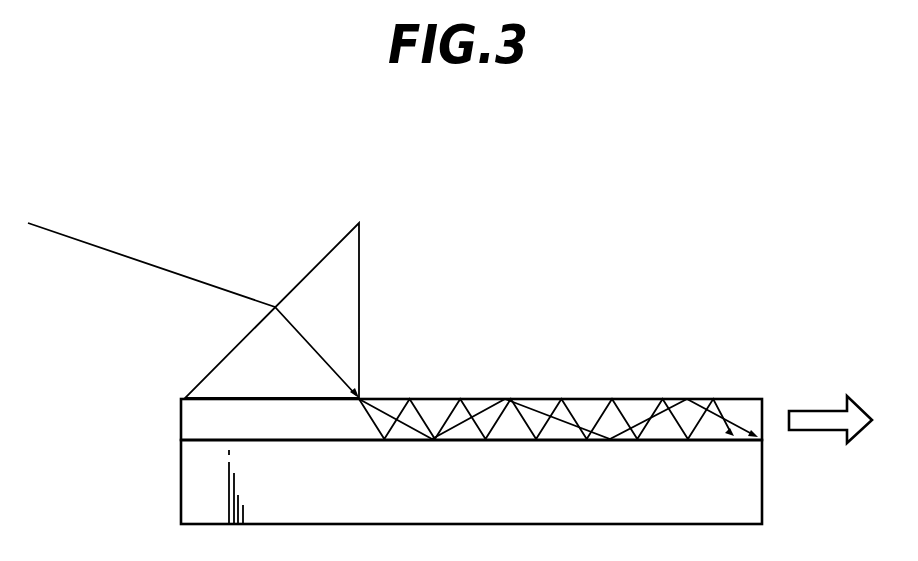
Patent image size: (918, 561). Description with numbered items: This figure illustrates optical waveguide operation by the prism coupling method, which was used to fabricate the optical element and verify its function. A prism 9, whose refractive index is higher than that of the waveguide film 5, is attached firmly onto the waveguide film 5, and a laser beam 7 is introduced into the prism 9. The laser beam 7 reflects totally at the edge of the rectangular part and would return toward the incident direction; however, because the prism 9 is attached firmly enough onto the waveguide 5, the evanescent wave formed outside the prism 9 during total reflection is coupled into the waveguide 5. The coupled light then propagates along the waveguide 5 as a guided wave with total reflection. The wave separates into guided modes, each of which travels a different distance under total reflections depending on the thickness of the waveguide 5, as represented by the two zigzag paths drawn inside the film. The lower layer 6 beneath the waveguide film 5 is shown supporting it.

The waveguide film 5 is at (195, 418).
The substrate layer with diffraction grating 6 is at (202, 485).
The laser beam 7 is at (100, 243).
The prism 9 is at (343, 283).